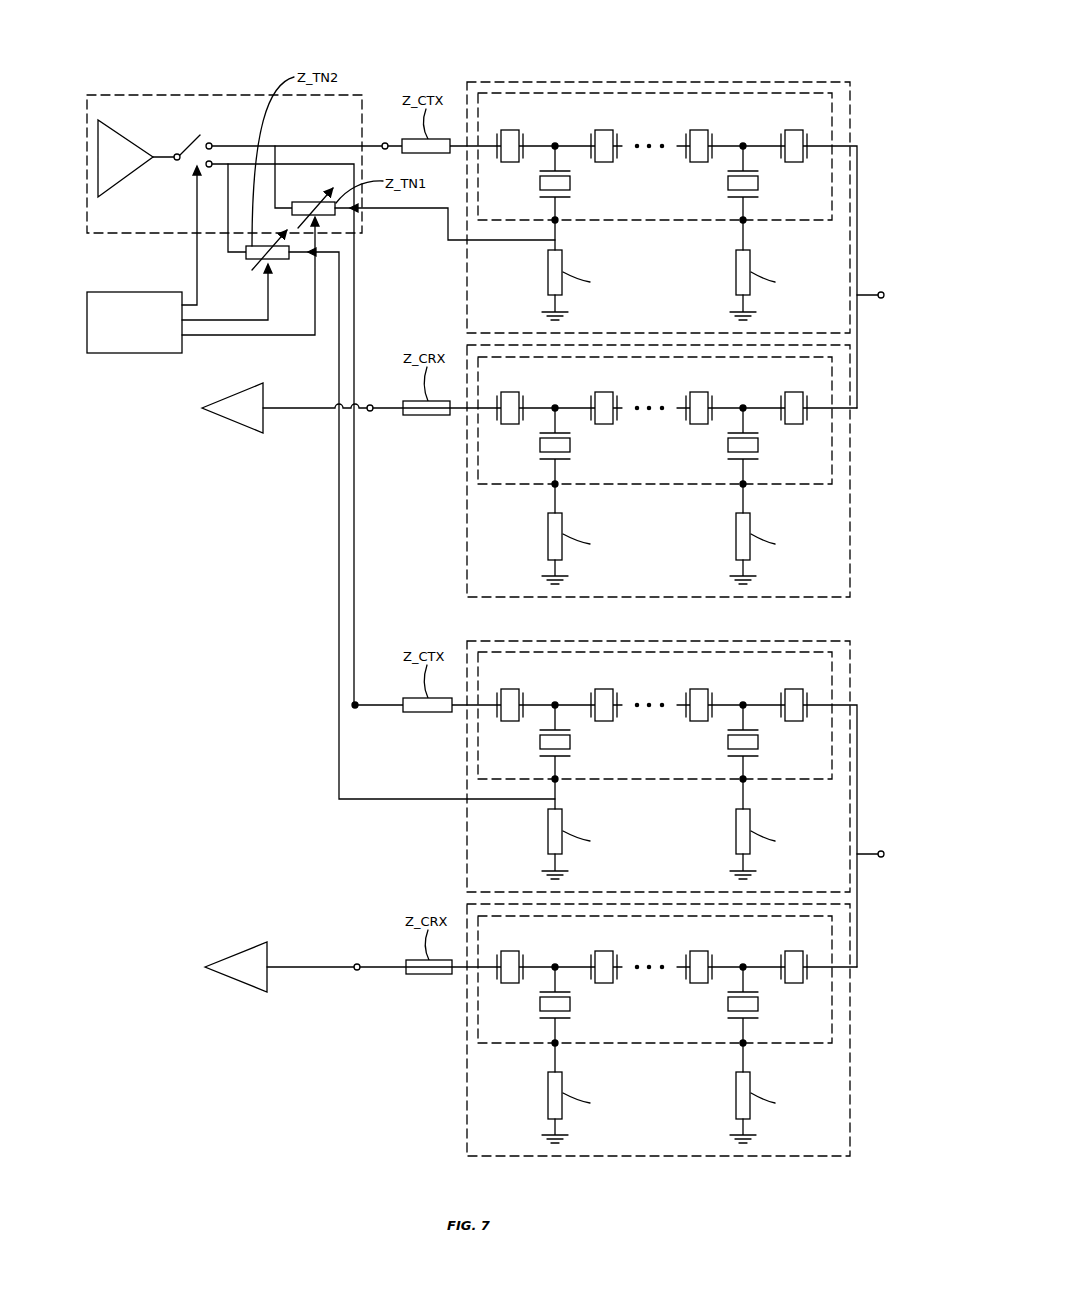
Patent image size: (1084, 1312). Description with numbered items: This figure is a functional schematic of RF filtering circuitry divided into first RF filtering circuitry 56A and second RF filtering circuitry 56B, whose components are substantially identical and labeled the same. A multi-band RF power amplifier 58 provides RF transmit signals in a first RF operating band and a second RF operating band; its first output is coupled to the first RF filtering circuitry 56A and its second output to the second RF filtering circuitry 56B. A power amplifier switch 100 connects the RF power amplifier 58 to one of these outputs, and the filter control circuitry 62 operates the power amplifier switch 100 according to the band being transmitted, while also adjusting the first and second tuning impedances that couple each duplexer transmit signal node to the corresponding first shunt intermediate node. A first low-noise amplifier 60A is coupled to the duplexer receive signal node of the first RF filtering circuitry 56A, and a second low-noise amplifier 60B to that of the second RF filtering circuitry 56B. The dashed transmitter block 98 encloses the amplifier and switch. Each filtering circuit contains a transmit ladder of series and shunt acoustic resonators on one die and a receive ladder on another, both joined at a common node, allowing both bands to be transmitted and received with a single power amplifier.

The first RF filtering circuitry 56A is at (745, 52).
The second RF filtering circuitry 56B is at (819, 626).
The RF power amplifier 58 is at (123, 165).
The first low-noise amplifier 60A is at (255, 417).
The second low-noise amplifier 60B is at (258, 976).
The filter control circuitry 62 is at (127, 341).
The transmitter 98 is at (107, 229).
The power amplifier switch 100 is at (184, 132).